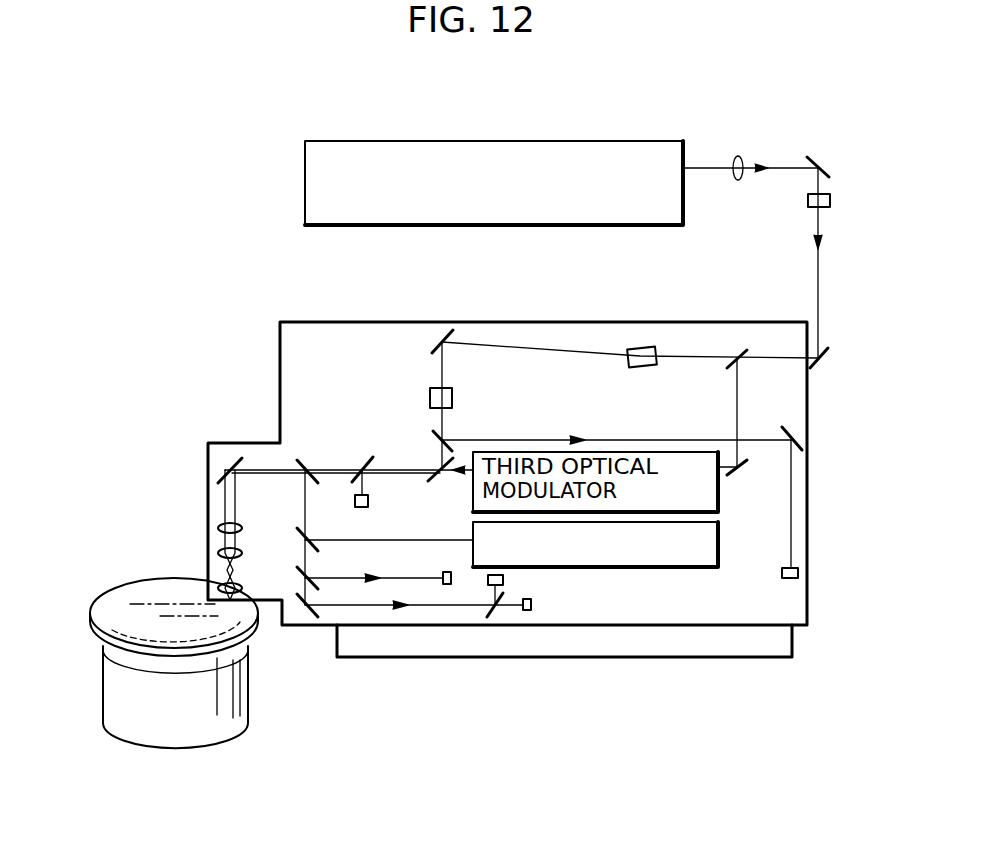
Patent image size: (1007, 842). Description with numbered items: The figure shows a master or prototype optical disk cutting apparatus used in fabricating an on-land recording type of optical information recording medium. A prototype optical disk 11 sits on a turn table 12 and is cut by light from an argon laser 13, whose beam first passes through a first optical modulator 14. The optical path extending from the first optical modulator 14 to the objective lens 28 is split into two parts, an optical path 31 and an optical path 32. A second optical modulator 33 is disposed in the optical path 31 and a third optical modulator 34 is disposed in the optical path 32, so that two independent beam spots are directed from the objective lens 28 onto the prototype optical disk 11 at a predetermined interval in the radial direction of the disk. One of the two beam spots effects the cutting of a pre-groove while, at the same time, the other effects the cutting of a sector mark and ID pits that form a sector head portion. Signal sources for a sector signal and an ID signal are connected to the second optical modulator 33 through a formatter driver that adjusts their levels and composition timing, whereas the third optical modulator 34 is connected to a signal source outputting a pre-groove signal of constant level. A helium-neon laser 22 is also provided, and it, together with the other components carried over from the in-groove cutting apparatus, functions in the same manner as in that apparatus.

The prototype optical disk 11 is at (128, 605).
The turn table 12 is at (225, 690).
The argon laser 13 is at (600, 141).
The first optical modulator 14 is at (830, 200).
The helium-neon laser 22 is at (673, 567).
The objective lens 28 is at (218, 585).
The optical path 31 is at (722, 358).
The optical path 32 is at (692, 440).
The second optical modulator 33 is at (640, 347).
The third optical modulator 34 is at (722, 482).